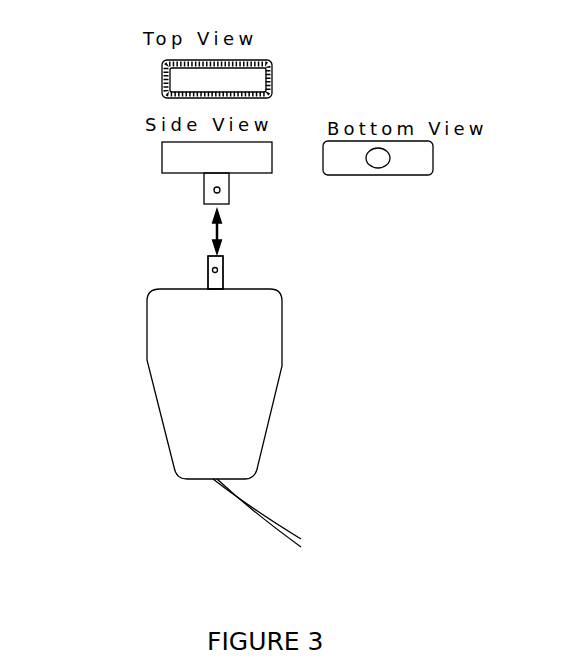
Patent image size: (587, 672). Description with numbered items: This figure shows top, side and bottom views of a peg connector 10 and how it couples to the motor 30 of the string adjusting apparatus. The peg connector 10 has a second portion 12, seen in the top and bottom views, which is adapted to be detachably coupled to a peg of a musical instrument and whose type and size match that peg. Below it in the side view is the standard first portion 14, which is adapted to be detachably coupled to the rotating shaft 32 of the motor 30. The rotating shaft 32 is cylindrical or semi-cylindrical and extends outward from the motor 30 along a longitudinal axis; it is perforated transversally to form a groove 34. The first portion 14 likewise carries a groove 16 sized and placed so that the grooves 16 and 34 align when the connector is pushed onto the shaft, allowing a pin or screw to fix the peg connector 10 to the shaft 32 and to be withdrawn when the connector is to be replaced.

The peg connector 10 is at (282, 142).
The second portion 12 is at (162, 80).
The first portion 14 is at (365, 158).
The groove 16 is at (213, 190).
The motor 30 is at (282, 367).
The rotating shaft 32 is at (208, 258).
The groove 34 is at (223, 272).